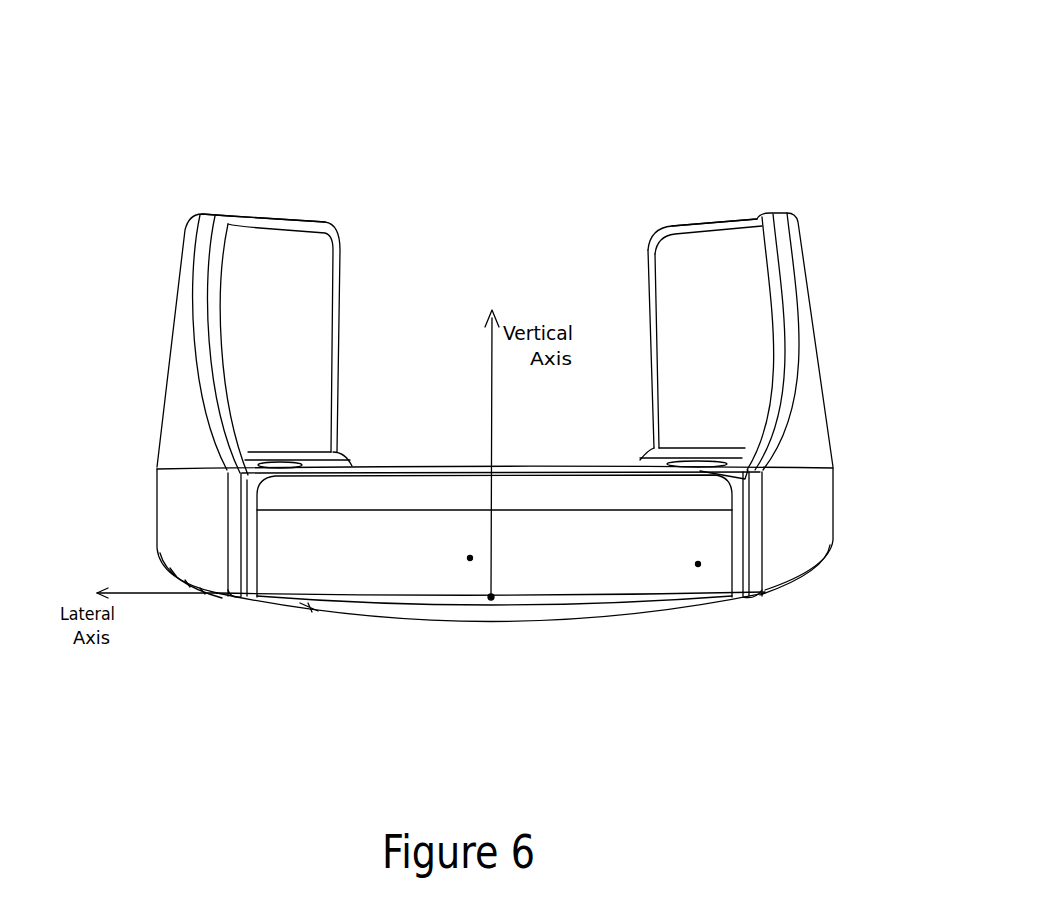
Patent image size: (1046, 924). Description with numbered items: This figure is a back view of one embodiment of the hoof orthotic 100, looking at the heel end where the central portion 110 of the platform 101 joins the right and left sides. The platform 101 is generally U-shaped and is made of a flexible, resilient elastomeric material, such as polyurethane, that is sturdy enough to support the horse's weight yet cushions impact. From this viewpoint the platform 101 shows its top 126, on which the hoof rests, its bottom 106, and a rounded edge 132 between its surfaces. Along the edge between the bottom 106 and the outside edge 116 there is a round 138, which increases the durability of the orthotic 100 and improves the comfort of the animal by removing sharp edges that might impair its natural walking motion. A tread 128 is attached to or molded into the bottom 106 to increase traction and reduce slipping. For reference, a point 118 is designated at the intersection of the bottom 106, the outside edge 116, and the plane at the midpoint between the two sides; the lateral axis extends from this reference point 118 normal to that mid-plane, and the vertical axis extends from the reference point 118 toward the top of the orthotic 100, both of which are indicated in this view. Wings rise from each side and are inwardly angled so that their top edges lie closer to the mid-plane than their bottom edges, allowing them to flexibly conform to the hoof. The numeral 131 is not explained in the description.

The hoof orthotic 100 is at (538, 88).
The platform 101 is at (396, 464).
The bottom 106 is at (398, 620).
The central portion 110 is at (470, 558).
The outside edge 116 is at (699, 566).
The reference point 118 is at (491, 597).
The top 126 is at (483, 466).
The tread 128 is at (768, 594).
The left channel 131 is at (217, 593).
The rounded edge 132 is at (582, 482).
The round 138 is at (320, 600).